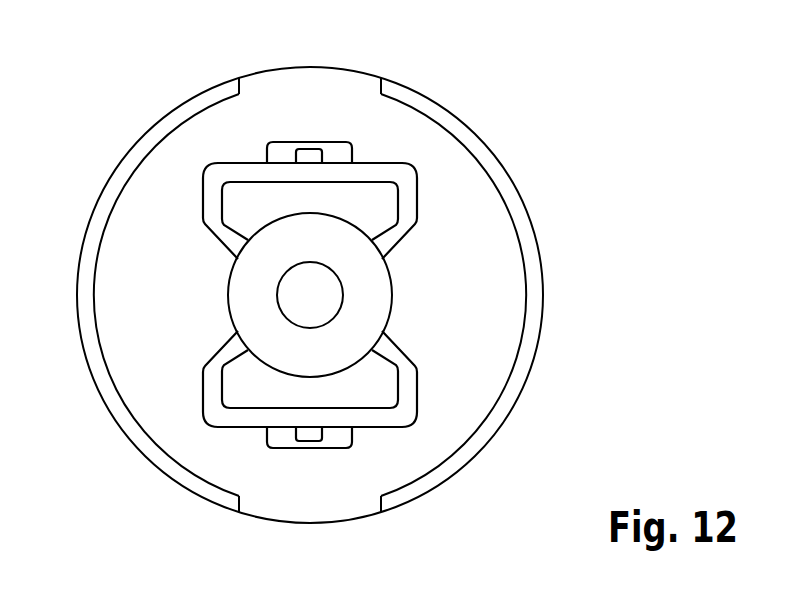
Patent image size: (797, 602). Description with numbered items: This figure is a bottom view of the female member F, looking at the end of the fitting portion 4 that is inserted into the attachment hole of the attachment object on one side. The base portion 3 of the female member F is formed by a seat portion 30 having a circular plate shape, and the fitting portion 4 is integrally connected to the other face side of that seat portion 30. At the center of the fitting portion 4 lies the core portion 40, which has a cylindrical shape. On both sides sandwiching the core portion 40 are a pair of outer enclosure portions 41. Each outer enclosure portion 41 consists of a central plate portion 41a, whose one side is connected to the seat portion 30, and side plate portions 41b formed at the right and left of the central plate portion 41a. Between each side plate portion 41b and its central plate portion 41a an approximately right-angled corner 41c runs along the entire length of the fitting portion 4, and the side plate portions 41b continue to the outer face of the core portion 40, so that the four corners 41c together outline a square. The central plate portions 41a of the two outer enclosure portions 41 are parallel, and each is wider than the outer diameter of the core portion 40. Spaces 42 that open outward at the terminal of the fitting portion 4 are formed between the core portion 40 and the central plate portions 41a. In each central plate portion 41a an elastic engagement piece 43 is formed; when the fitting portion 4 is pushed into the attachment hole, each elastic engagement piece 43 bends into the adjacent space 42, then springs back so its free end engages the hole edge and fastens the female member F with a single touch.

The female member F is at (482, 108).
The base portion 3 is at (483, 242).
The seat portion 30 is at (505, 290).
The fitting portion 4 is at (429, 295).
The core portion 40 is at (376, 302).
The outer enclosure portion 41 is at (377, 173).
The central plate portion 41a is at (237, 170).
The side plate portion 41b is at (204, 203).
The corner 41c is at (208, 167).
The space 42 is at (253, 192).
The elastic engagement piece 43 is at (328, 156).